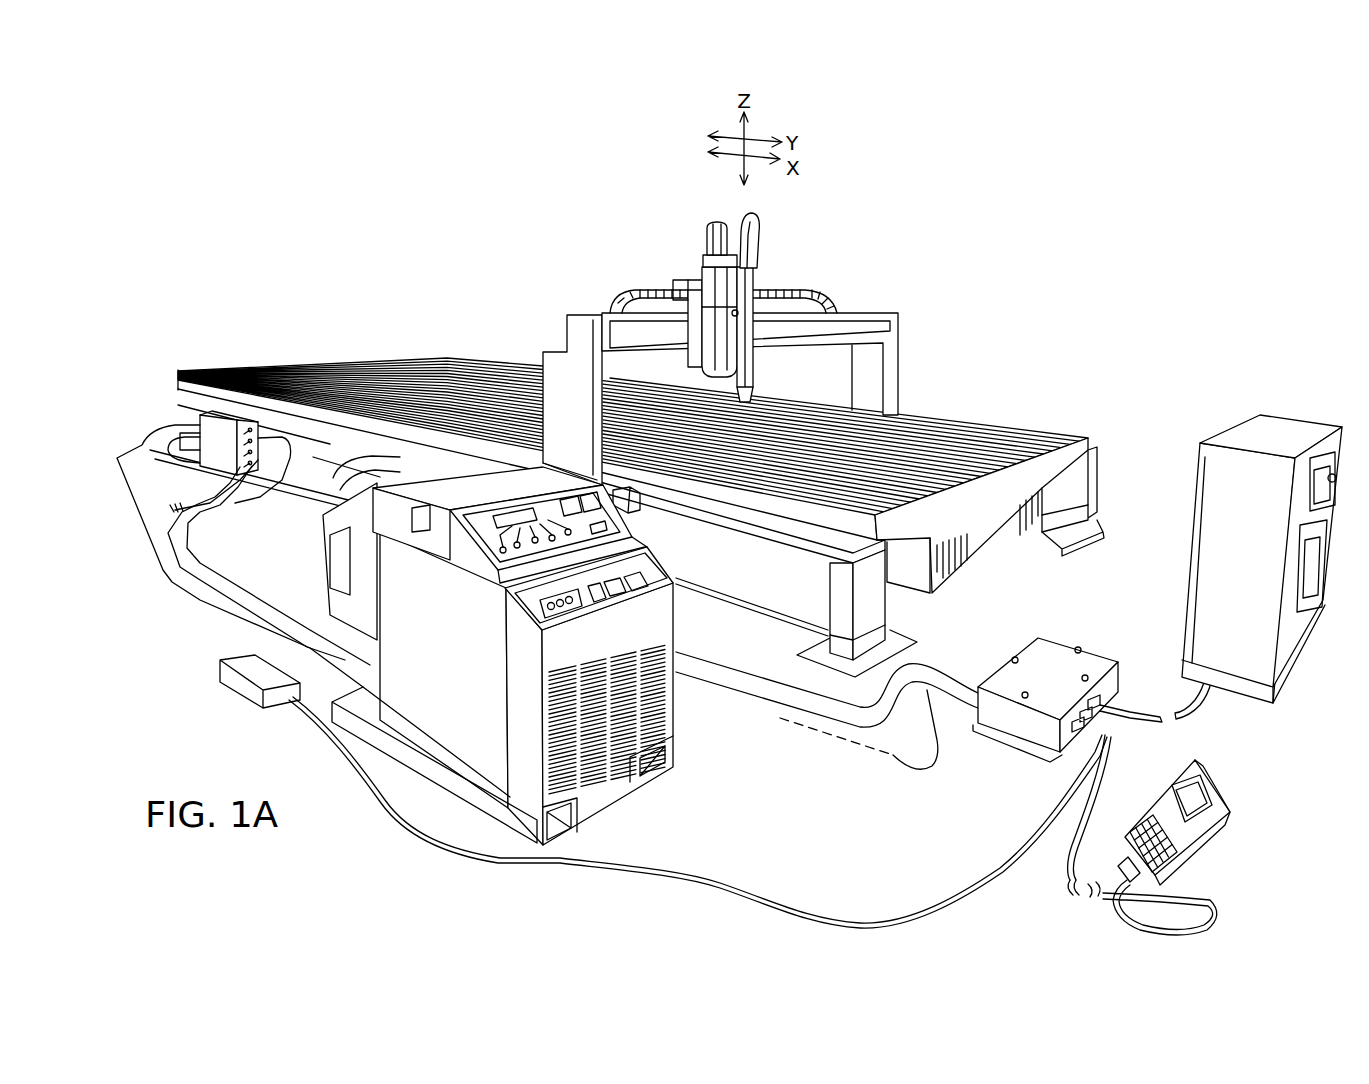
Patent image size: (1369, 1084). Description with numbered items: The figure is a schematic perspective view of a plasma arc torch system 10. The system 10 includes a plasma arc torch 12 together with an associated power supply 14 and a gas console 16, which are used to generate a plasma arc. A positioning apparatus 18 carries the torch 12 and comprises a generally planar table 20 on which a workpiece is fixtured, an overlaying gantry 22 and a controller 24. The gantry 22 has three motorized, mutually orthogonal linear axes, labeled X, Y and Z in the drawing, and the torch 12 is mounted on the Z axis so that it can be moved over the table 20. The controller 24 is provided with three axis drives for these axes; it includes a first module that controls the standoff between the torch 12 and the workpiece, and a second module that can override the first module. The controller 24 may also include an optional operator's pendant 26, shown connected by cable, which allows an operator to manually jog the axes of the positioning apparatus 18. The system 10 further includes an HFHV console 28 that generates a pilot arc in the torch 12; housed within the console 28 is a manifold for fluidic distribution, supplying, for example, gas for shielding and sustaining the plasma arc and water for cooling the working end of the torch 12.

The plasma arc torch system 10 is at (1039, 261).
The plasma arc torch 12 is at (774, 372).
The power supply 14 is at (700, 713).
The gas console 16 is at (653, 532).
The positioning apparatus 18 is at (469, 313).
The table 20 is at (1021, 420).
The gantry 22 is at (918, 323).
The controller 24 is at (1257, 778).
The operator's pendant 26 is at (1232, 849).
The HFHV console 28 is at (206, 448).